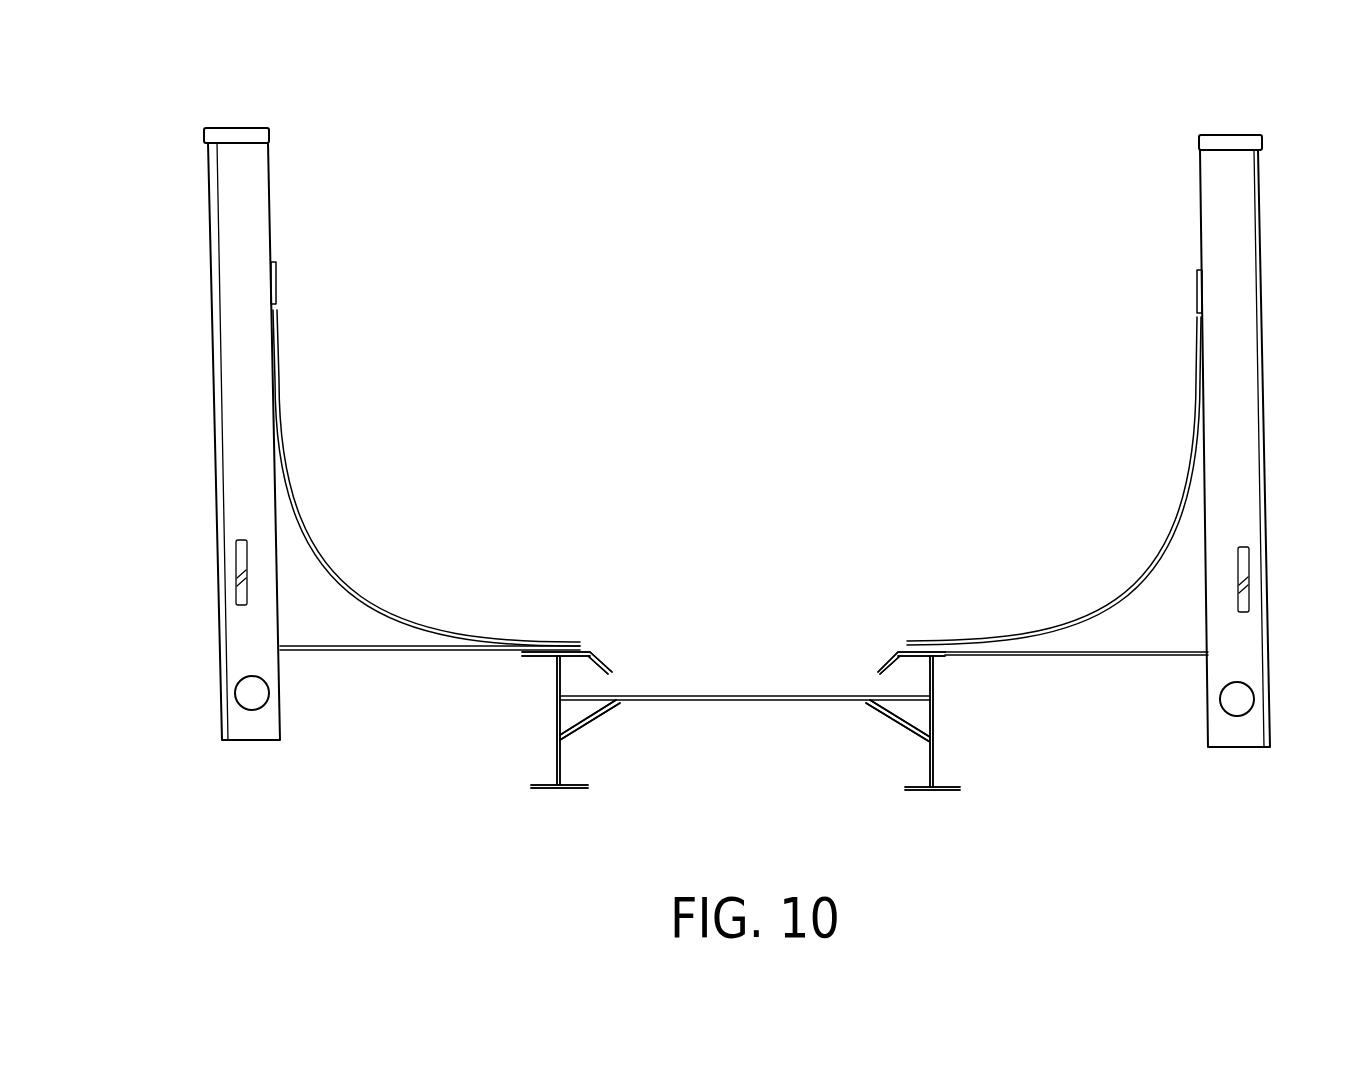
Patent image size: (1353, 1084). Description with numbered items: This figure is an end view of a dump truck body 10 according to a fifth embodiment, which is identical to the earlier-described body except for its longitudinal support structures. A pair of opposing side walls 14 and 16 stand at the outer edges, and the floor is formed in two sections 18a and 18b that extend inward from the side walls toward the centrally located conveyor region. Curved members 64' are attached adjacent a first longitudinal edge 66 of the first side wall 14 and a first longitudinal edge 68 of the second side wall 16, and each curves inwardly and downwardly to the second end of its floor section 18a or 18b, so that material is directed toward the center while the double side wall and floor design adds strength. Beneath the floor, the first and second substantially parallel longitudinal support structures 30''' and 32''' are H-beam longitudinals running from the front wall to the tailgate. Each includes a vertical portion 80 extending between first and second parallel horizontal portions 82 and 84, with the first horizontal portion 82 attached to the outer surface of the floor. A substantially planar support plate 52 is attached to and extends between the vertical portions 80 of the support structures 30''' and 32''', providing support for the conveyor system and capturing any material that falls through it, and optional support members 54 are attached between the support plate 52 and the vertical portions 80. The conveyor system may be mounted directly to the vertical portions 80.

The dump body 10 is at (1115, 85).
The first side wall 14 is at (210, 325).
The second side wall 16 is at (1262, 315).
The floor section 18a is at (389, 650).
The floor section 18b is at (1085, 656).
The first longitudinal support structure 30''' is at (543, 742).
The second longitudinal support structure 32''' is at (968, 752).
The substantially planar support plate 52 is at (712, 693).
The support member 54 is at (605, 712).
The curved member 64' is at (737, 478).
The first longitudinal edge of first side wall 66 is at (278, 295).
The first longitudinal edge of second side wall 68 is at (1198, 292).
The vertical portion 80 is at (556, 716).
The first horizontal portion 82 is at (545, 657).
The second horizontal portion 84 is at (572, 789).